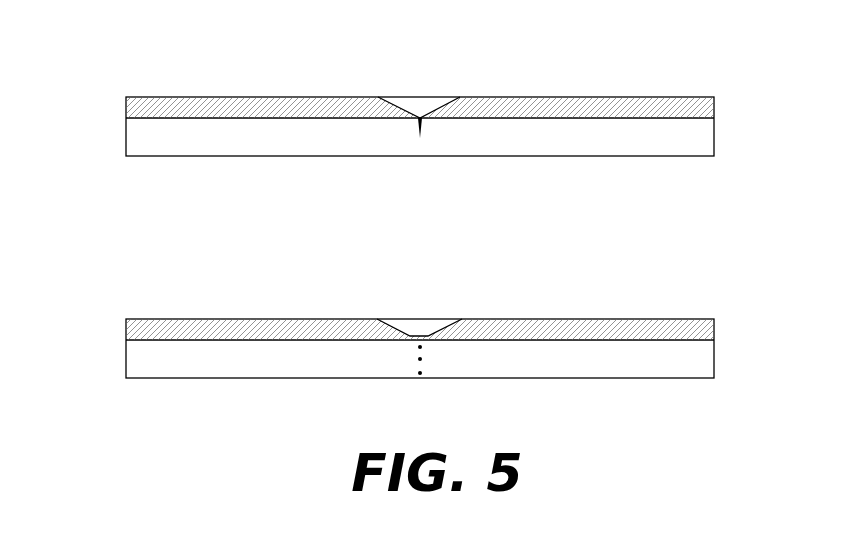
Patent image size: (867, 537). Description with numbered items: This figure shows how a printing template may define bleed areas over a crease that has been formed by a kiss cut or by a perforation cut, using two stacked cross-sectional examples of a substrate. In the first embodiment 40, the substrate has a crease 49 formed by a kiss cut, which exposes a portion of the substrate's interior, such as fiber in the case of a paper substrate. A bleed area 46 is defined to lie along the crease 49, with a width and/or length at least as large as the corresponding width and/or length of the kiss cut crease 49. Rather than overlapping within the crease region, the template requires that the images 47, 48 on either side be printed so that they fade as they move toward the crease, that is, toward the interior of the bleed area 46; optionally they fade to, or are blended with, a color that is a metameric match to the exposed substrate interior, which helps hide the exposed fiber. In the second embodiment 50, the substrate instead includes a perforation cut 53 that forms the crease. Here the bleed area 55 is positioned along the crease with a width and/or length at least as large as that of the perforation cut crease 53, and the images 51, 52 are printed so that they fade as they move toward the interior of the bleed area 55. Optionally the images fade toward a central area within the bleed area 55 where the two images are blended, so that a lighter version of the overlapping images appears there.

The first embodiment 40 is at (97, 106).
The bleed area 46 is at (378, 93).
The image 47 is at (221, 79).
The image 48 is at (596, 79).
The crease 49 is at (415, 165).
The second embodiment 50 is at (97, 328).
The image 51 is at (221, 301).
The image 52 is at (596, 301).
The perforation cut 53 is at (416, 389).
The bleed area 55 is at (377, 313).